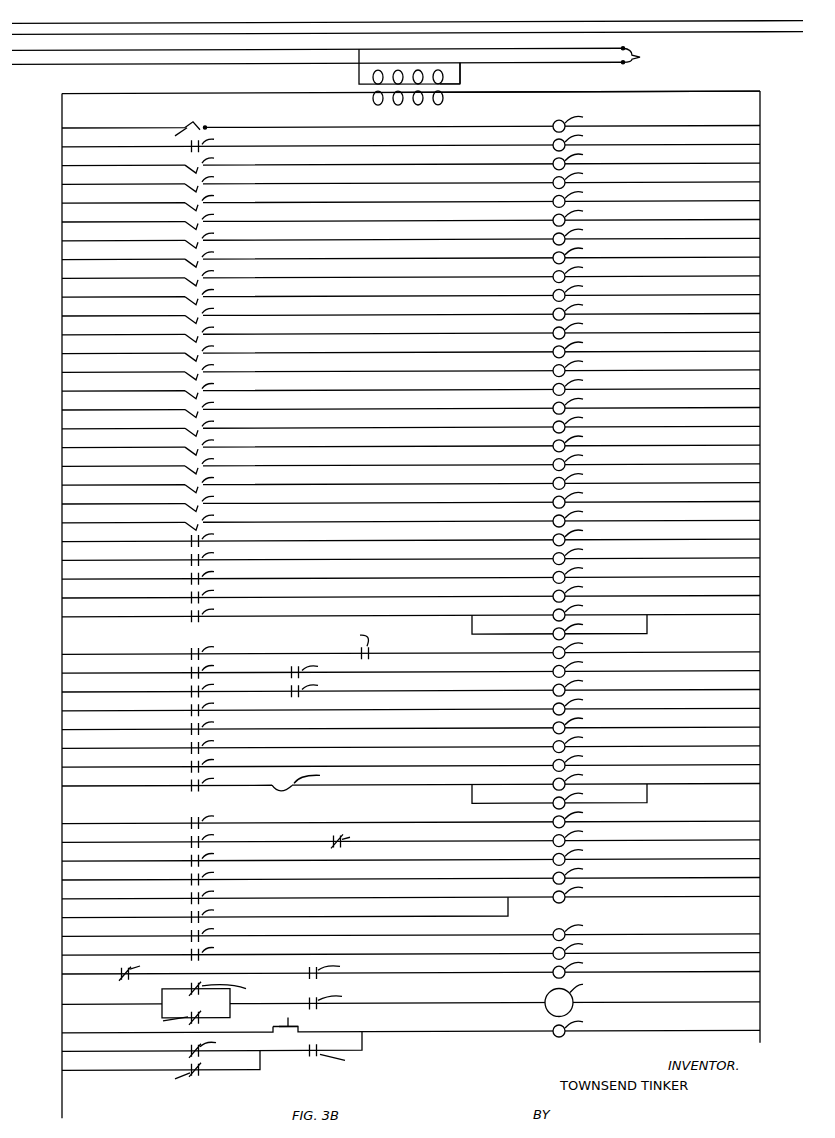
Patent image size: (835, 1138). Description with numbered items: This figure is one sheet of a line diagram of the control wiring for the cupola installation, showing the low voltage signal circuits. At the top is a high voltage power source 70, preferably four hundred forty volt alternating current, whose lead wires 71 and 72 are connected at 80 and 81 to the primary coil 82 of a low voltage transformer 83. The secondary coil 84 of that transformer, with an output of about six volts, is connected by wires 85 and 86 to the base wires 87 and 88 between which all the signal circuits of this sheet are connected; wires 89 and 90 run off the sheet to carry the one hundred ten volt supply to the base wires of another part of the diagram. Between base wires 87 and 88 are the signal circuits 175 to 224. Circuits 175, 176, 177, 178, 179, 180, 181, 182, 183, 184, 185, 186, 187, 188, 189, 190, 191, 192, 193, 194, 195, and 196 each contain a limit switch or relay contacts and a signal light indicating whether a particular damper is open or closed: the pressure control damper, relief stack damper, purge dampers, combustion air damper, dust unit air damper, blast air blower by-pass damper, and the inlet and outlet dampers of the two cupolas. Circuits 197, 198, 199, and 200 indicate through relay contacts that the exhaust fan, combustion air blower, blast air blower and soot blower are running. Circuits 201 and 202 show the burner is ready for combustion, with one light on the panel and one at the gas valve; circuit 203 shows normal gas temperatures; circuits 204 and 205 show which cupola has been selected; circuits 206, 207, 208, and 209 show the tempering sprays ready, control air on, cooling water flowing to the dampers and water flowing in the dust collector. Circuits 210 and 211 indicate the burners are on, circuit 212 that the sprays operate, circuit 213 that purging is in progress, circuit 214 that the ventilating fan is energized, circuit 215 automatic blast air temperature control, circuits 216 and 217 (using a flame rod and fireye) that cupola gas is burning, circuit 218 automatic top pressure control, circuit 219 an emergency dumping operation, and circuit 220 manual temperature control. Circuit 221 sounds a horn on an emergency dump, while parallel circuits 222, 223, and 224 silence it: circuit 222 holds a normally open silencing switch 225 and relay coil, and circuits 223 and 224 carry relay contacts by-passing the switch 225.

The high voltage power source 70 is at (645, 56).
The lead wire 71 is at (527, 46).
The lead wire 72 is at (528, 63).
The connection point 80 is at (358, 50).
The connection point 81 is at (462, 66).
The primary coil 82 is at (373, 77).
The low voltage transformer 83 is at (465, 84).
The secondary coil 84 is at (373, 98).
The wire 85 is at (230, 92).
The wire 86 is at (643, 92).
The base wire 87 is at (62, 107).
The base wire 88 is at (766, 100).
The wire 89 is at (678, 22).
The wire 90 is at (728, 33).
The signal circuit 175 is at (66, 129).
The signal circuit 176 is at (108, 149).
The signal circuit 177 is at (148, 168).
The signal circuit 178 is at (168, 187).
The signal circuit 179 is at (122, 206).
The signal circuit 180 is at (122, 224).
The signal circuit 181 is at (140, 242).
The signal circuit 182 is at (160, 261).
The signal circuit 183 is at (66, 281).
The signal circuit 184 is at (117, 298).
The signal circuit 185 is at (132, 317).
The signal circuit 186 is at (157, 336).
The signal circuit 187 is at (177, 354).
The signal circuit 188 is at (66, 375).
The signal circuit 189 is at (117, 393).
The signal circuit 190 is at (127, 412).
The signal circuit 191 is at (152, 431).
The signal circuit 192 is at (167, 449).
The signal circuit 193 is at (182, 468).
The signal circuit 194 is at (66, 488).
The signal circuit 195 is at (117, 507).
The signal circuit 196 is at (132, 525).
The signal circuit 197 is at (137, 543).
The signal circuit 198 is at (150, 562).
The signal circuit 199 is at (152, 580).
The signal circuit 200 is at (167, 599).
The signal circuit 201 is at (68, 619).
The signal circuit 202 is at (470, 628).
The signal circuit 203 is at (105, 655).
The signal circuit 204 is at (118, 674).
The signal circuit 205 is at (138, 693).
The signal circuit 206 is at (158, 712).
The signal circuit 207 is at (178, 731).
The signal circuit 208 is at (72, 750).
The signal circuit 209 is at (120, 768).
The signal circuit 210 is at (130, 789).
The signal circuit 211 is at (470, 800).
The signal circuit 212 is at (143, 826).
The signal circuit 213 is at (163, 844).
The signal circuit 214 is at (173, 862).
The signal circuit 215 is at (185, 881).
The signal circuit 216 is at (72, 901).
The signal circuit 217 is at (107, 920).
The signal circuit 218 is at (130, 938).
The signal circuit 219 is at (68, 958).
The signal circuit 220 is at (112, 980).
The horn circuit 221 is at (70, 1005).
The horn silencing circuit 222 is at (411, 1029).
The horn silencing circuit 223 is at (128, 1051).
The horn silencing circuit 224 is at (115, 1072).
The silencing switch 225 is at (302, 1028).